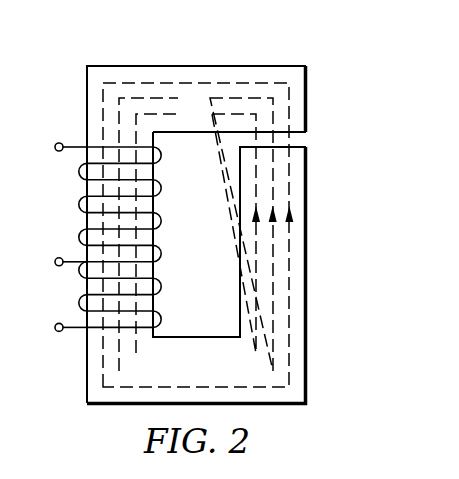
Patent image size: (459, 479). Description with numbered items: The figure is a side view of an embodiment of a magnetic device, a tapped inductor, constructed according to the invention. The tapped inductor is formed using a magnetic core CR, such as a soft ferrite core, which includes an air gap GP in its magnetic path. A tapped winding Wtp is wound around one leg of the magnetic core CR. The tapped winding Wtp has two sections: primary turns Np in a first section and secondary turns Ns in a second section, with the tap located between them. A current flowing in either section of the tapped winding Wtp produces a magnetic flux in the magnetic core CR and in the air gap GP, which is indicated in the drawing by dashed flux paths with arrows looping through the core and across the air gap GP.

The magnetic core CR is at (196, 54).
The air gap GP is at (321, 140).
The tapped winding Wtp is at (112, 237).
The primary turns Np is at (134, 204).
The secondary turns Ns is at (133, 295).